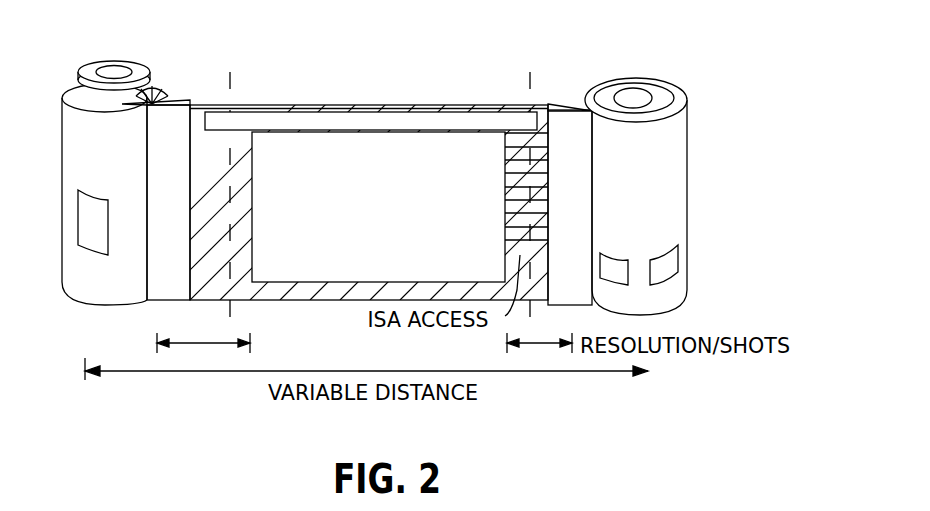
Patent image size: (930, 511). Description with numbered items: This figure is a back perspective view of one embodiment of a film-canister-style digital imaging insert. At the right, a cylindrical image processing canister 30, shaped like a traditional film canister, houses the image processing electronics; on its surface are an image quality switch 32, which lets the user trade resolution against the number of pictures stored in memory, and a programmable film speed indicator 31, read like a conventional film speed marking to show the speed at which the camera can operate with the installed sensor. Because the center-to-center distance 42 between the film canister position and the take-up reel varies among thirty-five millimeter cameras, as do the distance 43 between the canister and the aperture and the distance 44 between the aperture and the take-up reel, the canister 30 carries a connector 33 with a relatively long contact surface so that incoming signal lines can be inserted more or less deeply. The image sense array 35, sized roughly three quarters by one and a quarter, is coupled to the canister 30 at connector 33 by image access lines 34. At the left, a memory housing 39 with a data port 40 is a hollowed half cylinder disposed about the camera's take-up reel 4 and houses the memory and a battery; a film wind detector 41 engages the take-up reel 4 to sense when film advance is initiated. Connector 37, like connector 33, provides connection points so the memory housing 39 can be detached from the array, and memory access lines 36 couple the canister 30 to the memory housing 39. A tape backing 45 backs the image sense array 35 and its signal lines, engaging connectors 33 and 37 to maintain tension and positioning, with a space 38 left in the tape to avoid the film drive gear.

The take-up reel 4 is at (121, 59).
The image processing canister 30 is at (688, 116).
The programmable film speed indicator 31 is at (680, 262).
The image quality switch 32 is at (611, 252).
The connector 33 is at (580, 222).
The image access lines 34 is at (503, 130).
The image sense array 35 is at (339, 292).
The memory access lines 36 is at (262, 305).
The connector 37 is at (179, 216).
The space 38 is at (373, 118).
The memory housing 39 is at (88, 298).
The data port 40 is at (84, 188).
The film wind detector 41 is at (153, 102).
The center-to-center distance 42 is at (203, 372).
The distance 43 is at (527, 344).
The distance 44 is at (182, 339).
The tape backing 45 is at (539, 110).